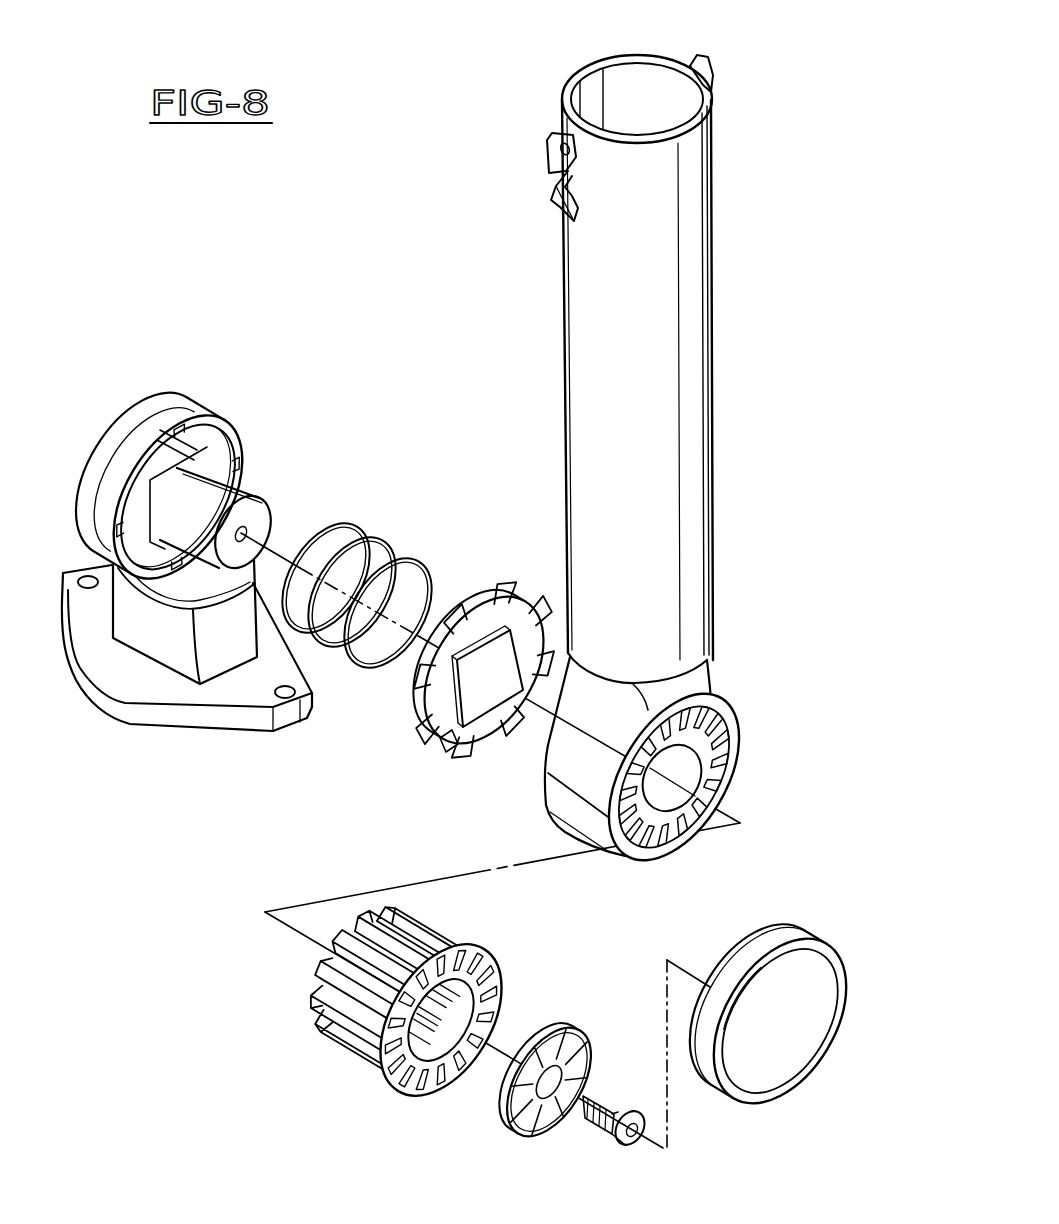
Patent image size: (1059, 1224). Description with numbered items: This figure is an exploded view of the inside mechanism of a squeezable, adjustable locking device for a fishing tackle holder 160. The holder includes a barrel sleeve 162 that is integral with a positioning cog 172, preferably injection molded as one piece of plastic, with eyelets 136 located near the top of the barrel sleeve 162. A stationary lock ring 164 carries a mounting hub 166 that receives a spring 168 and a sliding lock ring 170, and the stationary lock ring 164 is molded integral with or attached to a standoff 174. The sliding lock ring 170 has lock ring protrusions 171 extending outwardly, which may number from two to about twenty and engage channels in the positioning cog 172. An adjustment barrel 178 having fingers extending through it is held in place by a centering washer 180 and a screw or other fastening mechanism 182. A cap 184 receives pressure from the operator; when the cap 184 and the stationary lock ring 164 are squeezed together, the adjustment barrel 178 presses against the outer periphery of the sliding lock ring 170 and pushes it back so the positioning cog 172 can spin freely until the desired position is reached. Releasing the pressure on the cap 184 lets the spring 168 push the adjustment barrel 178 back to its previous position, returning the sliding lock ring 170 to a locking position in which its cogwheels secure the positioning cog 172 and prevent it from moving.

The eyelets 136 is at (553, 133).
The fishing tackle holder 160 is at (465, 360).
The barrel sleeve 162 is at (637, 354).
The stationary lock ring 164 is at (167, 398).
The mounting hub 166 is at (263, 513).
The spring 168 is at (363, 531).
The sliding lock ring 170 is at (525, 610).
The lock ring protrusions 171 is at (447, 750).
The positioning cog 172 is at (717, 708).
The standoff 174 is at (163, 653).
The adjustment barrel 178 is at (375, 1063).
The centering washer 180 is at (527, 1127).
The screw or other fastening mechanism 182 is at (640, 1110).
The cap 184 is at (817, 973).